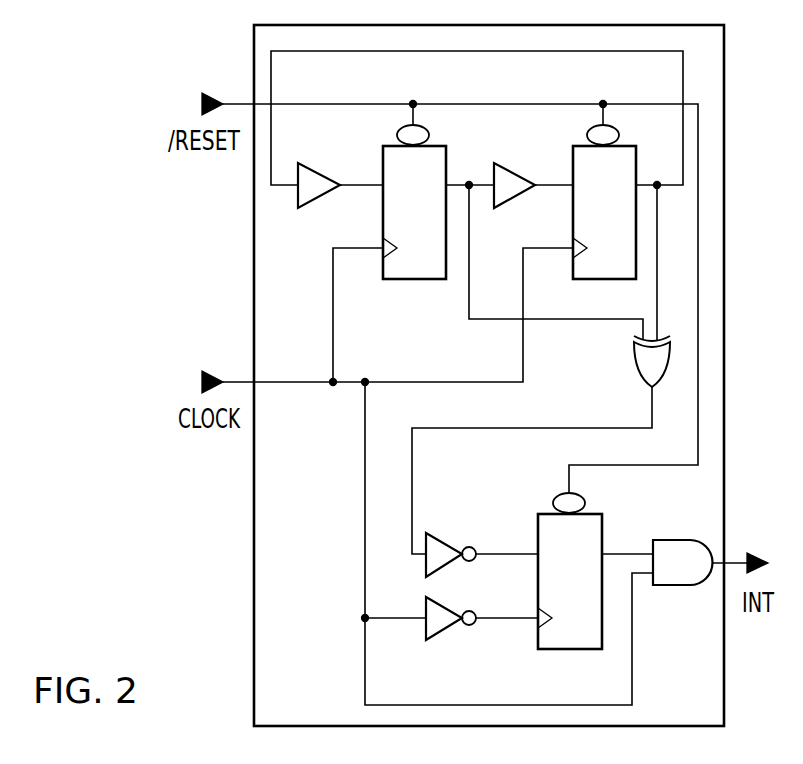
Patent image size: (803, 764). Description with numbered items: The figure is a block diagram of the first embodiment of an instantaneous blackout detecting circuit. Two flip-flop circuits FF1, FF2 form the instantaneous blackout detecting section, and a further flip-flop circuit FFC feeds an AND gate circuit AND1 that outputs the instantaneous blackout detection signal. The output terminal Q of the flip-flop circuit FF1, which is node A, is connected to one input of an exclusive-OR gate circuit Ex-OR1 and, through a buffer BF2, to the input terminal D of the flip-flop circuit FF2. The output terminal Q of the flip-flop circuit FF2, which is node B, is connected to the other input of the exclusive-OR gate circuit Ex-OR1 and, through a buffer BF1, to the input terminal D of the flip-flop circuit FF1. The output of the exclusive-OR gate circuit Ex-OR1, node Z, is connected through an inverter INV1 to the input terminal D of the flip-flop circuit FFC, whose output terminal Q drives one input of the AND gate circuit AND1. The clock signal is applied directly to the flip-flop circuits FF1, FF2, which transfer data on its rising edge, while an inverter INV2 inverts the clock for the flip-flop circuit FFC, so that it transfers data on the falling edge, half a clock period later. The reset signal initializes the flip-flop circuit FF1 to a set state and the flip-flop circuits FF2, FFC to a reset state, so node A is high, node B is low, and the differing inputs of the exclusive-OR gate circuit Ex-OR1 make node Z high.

The buffer BF1 is at (326, 176).
The buffer BF2 is at (520, 177).
The flip-flop circuit FF1 is at (412, 281).
The flip-flop circuit FF2 is at (612, 281).
The node A is at (469, 182).
The node B is at (657, 182).
The exclusive-OR gate circuit Ex-OR1 is at (636, 360).
The node Z is at (555, 427).
The inverter INV1 is at (448, 547).
The inverter INV2 is at (448, 610).
The flip-flop circuit FFC is at (571, 650).
The AND gate circuit AND1 is at (673, 539).